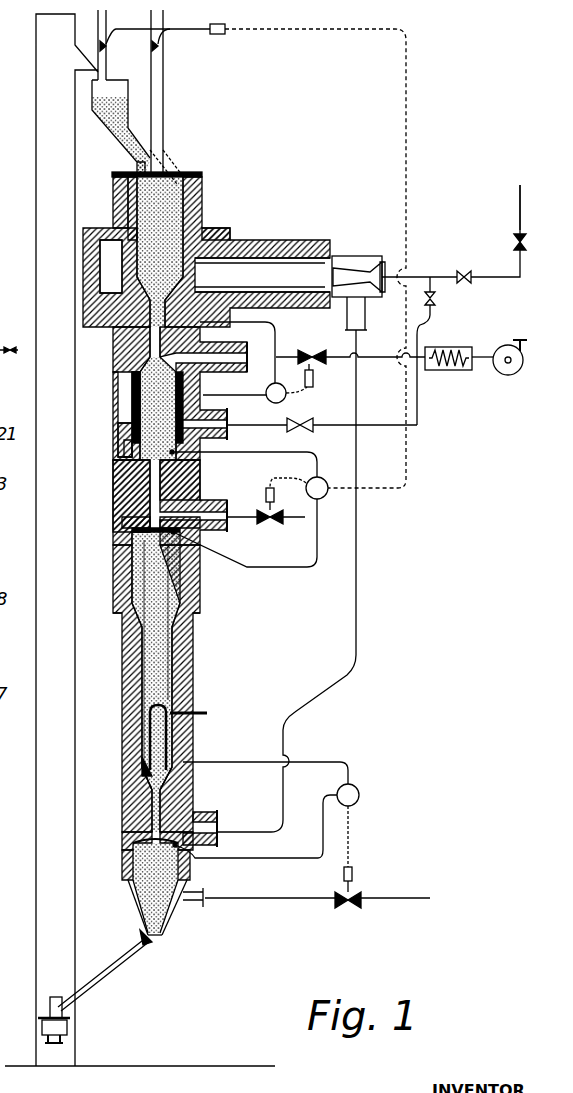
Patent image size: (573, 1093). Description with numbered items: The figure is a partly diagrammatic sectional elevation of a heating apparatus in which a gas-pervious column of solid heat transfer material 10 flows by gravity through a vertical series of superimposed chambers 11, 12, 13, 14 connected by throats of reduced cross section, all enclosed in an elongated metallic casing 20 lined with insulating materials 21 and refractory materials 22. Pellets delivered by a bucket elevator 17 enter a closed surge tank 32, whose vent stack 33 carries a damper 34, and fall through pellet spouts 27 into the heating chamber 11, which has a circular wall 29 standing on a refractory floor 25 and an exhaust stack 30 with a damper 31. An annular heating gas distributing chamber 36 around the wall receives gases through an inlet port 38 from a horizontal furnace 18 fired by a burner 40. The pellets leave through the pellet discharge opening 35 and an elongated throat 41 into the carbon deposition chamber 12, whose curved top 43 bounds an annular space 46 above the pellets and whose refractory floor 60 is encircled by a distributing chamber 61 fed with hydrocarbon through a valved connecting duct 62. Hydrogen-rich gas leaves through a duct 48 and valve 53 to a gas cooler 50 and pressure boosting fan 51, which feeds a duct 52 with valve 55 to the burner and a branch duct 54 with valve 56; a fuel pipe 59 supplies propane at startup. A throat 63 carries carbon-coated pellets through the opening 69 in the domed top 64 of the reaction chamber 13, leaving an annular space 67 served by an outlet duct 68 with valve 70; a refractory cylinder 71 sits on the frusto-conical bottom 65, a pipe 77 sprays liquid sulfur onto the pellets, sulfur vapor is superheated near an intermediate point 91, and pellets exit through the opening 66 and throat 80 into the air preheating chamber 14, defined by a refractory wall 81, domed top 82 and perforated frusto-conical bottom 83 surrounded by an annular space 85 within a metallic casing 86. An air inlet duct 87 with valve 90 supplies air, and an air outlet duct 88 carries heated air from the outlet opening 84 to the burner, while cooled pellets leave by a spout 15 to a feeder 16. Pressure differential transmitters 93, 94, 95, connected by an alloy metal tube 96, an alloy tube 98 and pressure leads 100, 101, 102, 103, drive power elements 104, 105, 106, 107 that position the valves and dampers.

The heat transfer material 10 is at (203, 208).
The heating chamber 11 is at (160, 252).
The carbon deposition chamber 12 is at (158, 393).
The reaction chamber 13 is at (156, 682).
The air preheating chamber 14 is at (155, 888).
The spout 15 is at (120, 965).
The feeder 16 is at (67, 1025).
The bucket elevator 17 is at (55, 958).
The furnace 18 is at (262, 275).
The casing 20 is at (197, 630).
The insulating materials 21 is at (233, 232).
The refractory materials 22 is at (111, 228).
The refractory floor 25 is at (115, 328).
The pellet spouts 27 is at (135, 165).
The circular wall 29 is at (126, 195).
The exhaust stack 30 is at (163, 130).
The damper 31 is at (160, 47).
The surge tank 32 is at (128, 92).
The vent stack 33 is at (93, 42).
The damper 34 is at (106, 45).
The pellet discharge opening 35 is at (128, 352).
The heating gas distributing chamber 36 is at (100, 277).
The inlet port 38 is at (200, 277).
The burner 40 is at (338, 272).
The throat 41 is at (131, 372).
The top 43 is at (128, 392).
The annular space 46 is at (118, 427).
The duct 48 is at (257, 352).
The gas cooler 50 is at (460, 371).
The pressure boosting fan 51 is at (524, 360).
The duct 52 is at (430, 275).
The valve 53 is at (350, 349).
The branch duct 54 is at (520, 212).
The valve 55 is at (469, 274).
The valve 56 is at (532, 244).
The fuel pipe 59 is at (421, 338).
The refractory floor 60 is at (114, 466).
The distributing chamber 61 is at (118, 444).
The connecting duct 62 is at (229, 428).
The throat 63 is at (132, 492).
The domed top 64 is at (122, 520).
The frusto-conical bottom 65 is at (142, 762).
The opening 66 is at (170, 784).
The annular space 67 is at (117, 548).
The outlet duct 68 is at (236, 510).
The opening 69 is at (131, 530).
The valve 70 is at (268, 527).
The refractory cylinder 71 is at (150, 715).
The pipe 77 is at (208, 713).
The throat 80 is at (148, 800).
The refractory wall 81 is at (124, 864).
The domed top 82 is at (122, 840).
The frusto-conical bottom 83 is at (170, 915).
The outlet opening 84 is at (200, 820).
The annular space 85 is at (135, 905).
The metallic casing 86 is at (185, 912).
The air inlet duct 87 is at (260, 898).
The air outlet duct 88 is at (358, 548).
The valve 90 is at (351, 909).
The intermediate point 91 is at (158, 698).
The pressure differential transmitter 93 is at (288, 398).
The transmitter 94 is at (329, 500).
The transmitter 95 is at (360, 789).
The alloy metal tube 96 is at (283, 323).
The alloy tube 98 is at (247, 395).
The pressure lead 100 is at (330, 453).
The pressure lead 101 is at (297, 570).
The pressure lead 102 is at (322, 760).
The pressure lead 103 is at (255, 858).
The power element 104 is at (313, 378).
The power element 105 is at (353, 873).
The power element 106 is at (266, 490).
The power element 107 is at (225, 27).